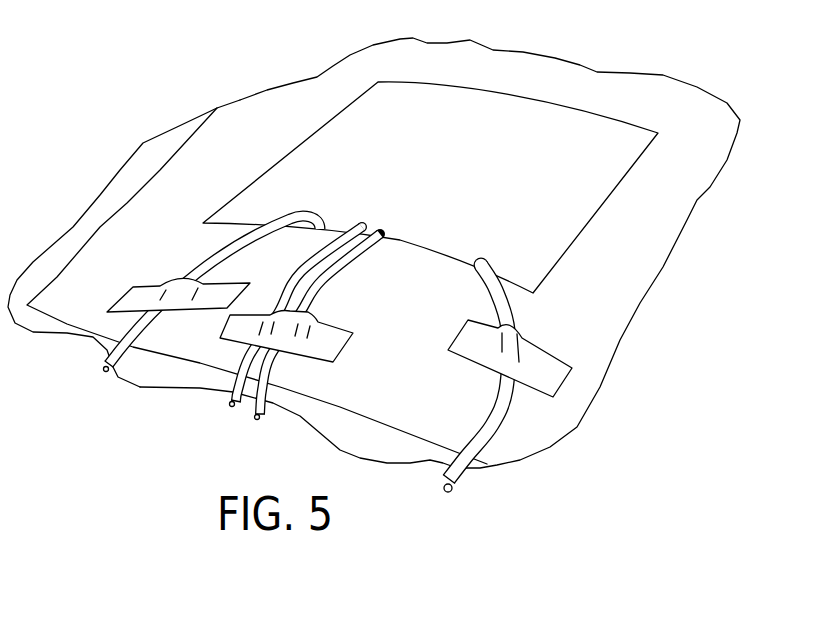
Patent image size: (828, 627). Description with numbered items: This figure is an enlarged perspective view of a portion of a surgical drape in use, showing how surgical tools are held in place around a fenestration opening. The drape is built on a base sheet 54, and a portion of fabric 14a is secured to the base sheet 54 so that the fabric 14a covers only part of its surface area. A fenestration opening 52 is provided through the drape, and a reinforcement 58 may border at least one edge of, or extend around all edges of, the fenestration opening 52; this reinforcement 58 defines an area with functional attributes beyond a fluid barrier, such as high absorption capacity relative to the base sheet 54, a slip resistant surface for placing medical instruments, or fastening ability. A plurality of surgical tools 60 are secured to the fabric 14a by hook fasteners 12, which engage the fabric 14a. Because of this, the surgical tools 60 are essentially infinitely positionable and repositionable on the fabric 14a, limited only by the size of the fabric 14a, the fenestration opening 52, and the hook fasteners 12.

The hook fasteners 12 is at (133, 293).
The fabric 14a is at (130, 220).
The fenestration opening 52 is at (478, 183).
The base sheet 54 is at (152, 158).
The reinforcement 58 is at (630, 273).
The surgical tools 60 is at (112, 371).